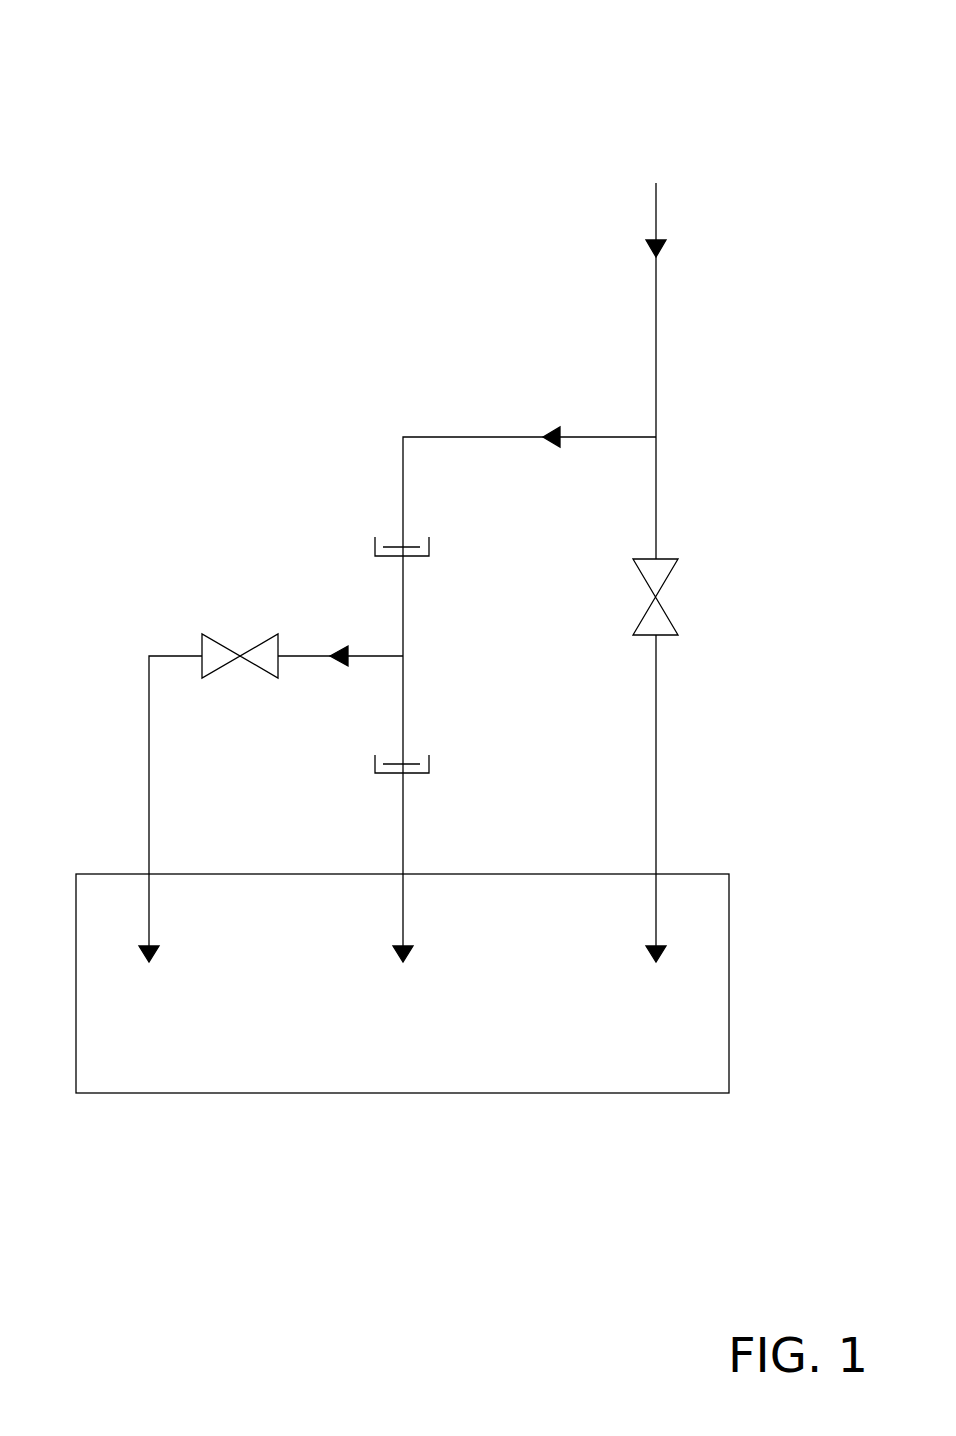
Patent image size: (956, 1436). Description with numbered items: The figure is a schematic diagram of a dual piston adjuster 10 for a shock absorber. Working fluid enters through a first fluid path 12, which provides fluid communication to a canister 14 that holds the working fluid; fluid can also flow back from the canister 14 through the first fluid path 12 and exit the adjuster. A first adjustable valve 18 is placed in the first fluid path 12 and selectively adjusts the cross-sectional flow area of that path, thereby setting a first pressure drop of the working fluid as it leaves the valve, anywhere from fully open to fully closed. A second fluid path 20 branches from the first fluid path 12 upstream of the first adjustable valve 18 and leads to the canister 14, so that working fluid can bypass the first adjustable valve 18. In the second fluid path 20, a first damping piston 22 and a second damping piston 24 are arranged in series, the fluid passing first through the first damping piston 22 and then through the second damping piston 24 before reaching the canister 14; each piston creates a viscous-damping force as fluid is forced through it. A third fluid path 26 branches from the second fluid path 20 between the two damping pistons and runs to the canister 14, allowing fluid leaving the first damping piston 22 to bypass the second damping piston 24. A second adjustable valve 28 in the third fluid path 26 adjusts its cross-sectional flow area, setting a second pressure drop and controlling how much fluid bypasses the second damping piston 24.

The dual piston adjuster 10 is at (755, 52).
The first fluid path 12 is at (656, 257).
The canister 14 is at (729, 985).
The first adjustable valve 18 is at (668, 578).
The second fluid path 20 is at (490, 437).
The first damping piston 22 is at (375, 547).
The second damping piston 24 is at (375, 765).
The third fluid path 26 is at (303, 654).
The second adjustable valve 28 is at (202, 644).